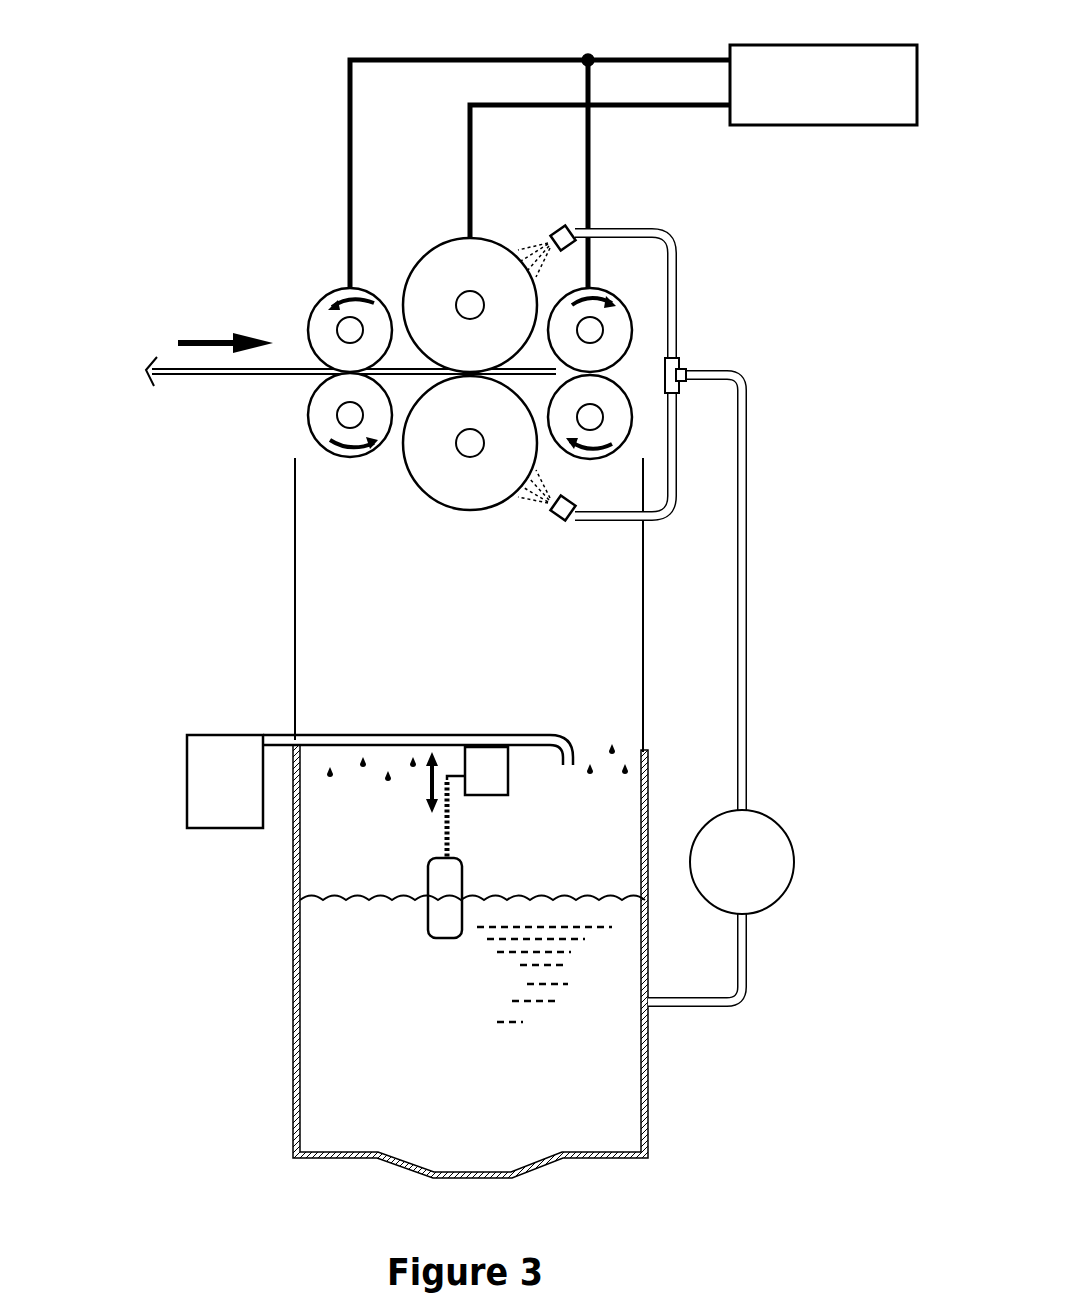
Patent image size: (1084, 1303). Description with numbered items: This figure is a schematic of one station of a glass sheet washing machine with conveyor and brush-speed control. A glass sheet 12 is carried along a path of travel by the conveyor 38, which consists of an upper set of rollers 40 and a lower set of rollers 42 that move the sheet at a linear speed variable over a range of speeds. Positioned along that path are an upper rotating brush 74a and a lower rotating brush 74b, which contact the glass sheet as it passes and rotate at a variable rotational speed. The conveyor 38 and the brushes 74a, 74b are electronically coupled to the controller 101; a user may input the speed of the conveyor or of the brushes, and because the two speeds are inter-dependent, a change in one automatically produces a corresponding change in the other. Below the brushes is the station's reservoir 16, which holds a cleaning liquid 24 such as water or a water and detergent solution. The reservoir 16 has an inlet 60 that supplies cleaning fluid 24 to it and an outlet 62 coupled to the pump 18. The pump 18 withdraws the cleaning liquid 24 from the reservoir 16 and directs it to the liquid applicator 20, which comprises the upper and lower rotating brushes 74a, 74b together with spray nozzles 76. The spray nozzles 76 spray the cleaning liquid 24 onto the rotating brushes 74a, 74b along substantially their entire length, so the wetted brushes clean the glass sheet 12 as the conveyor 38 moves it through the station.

The controller 101 is at (817, 46).
The liquid applicator 20 is at (512, 221).
The spray nozzles 76 is at (560, 229).
The upper rotating brush 74a is at (447, 265).
The lower rotating brush 74b is at (437, 465).
The upper set of rollers 40 is at (325, 325).
The lower set of rollers 42 is at (323, 427).
The conveyor 38 is at (312, 385).
The glass sheet 12 is at (190, 378).
The reservoir 16 is at (293, 953).
The cleaning liquid 24 is at (342, 1120).
The pump 18 is at (763, 893).
The outlet 62 is at (682, 1000).
The inlet 60 is at (527, 741).